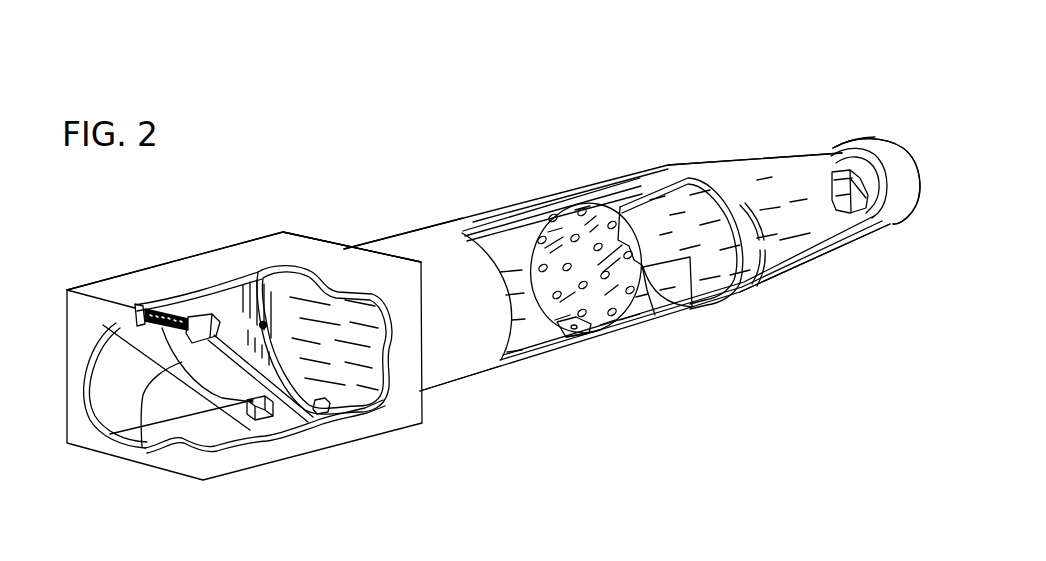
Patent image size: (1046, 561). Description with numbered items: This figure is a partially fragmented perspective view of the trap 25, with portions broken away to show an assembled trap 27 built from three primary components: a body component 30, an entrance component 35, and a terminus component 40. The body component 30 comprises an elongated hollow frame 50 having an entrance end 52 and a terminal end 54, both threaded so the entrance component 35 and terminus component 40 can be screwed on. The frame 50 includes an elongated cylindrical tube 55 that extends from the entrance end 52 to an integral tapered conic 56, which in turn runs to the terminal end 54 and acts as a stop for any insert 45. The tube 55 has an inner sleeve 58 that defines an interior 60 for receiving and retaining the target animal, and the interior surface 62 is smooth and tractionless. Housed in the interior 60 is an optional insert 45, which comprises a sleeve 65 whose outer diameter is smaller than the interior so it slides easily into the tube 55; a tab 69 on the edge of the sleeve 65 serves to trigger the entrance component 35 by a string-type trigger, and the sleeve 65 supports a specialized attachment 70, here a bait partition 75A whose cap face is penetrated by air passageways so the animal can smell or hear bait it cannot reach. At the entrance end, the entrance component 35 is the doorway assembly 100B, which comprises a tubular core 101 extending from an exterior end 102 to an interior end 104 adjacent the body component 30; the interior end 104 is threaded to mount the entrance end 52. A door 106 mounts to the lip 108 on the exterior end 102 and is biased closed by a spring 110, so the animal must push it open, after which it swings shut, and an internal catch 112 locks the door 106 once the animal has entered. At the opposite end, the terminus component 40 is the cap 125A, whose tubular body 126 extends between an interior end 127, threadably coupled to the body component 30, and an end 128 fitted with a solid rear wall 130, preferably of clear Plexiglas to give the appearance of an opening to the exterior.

The doorway assembly 100B is at (97, 258).
The tubular core 101 is at (249, 240).
The interior end 104 is at (313, 240).
The entrance component 35 is at (227, 228).
The exterior end 102 is at (84, 437).
The inner sleeve 58 is at (335, 362).
The lip 108 is at (138, 305).
The interior 60 is at (263, 325).
The spring 110 is at (245, 417).
The internal catch 112 is at (270, 415).
The door 106 is at (143, 447).
The body component 30 is at (410, 195).
The trap 25 is at (565, 95).
The assembled trap 27 is at (613, 143).
The elongated hollow frame 50 is at (480, 207).
The cylindrical tube 55 is at (463, 370).
The entrance end 52 is at (363, 242).
The insert 45 is at (553, 313).
The terminal end 54 is at (847, 233).
The tapered conic 56 is at (557, 198).
The sleeve 65 is at (655, 265).
The interior surface 62 is at (679, 256).
The attachment 70 is at (633, 278).
The tab 69 is at (583, 332).
The bait partition 75A is at (640, 300).
The terminus component 40 is at (867, 127).
The end 128 is at (906, 140).
The tubular body 126 is at (895, 224).
The interior end 127 is at (870, 229).
The cap 125A is at (857, 140).
The solid rear wall 130 is at (834, 186).